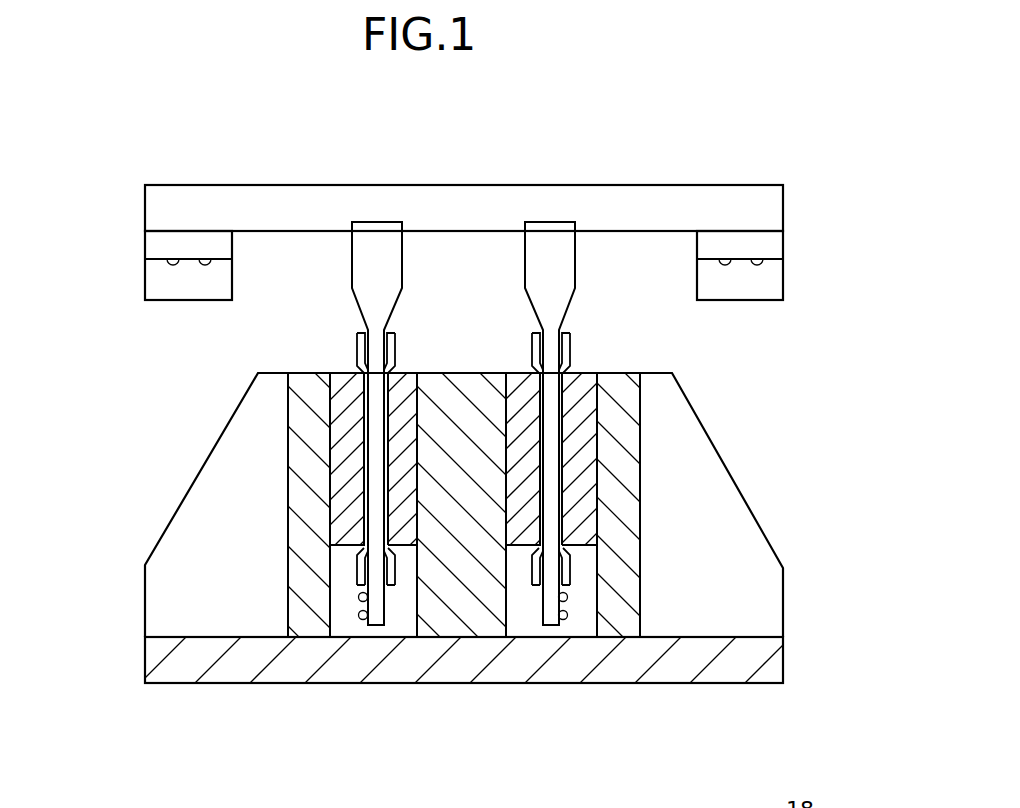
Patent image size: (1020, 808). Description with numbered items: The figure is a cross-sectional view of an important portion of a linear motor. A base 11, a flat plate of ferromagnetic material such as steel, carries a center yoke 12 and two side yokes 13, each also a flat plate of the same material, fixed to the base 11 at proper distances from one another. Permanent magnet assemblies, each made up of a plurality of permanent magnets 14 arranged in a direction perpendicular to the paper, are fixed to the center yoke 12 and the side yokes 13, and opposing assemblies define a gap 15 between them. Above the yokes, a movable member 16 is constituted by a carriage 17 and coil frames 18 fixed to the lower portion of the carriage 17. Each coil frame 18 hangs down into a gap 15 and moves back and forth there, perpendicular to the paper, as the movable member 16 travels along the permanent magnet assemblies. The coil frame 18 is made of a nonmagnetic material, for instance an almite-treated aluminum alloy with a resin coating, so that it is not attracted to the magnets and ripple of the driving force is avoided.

The base 11 is at (150, 656).
The center yoke 12 is at (450, 623).
The side yokes 13 is at (296, 408).
The permanent magnets 14 is at (525, 372).
The gap 15 is at (360, 374).
The movable member 16 is at (712, 158).
The carriage 17 is at (783, 205).
The coil frame 18 is at (352, 272).